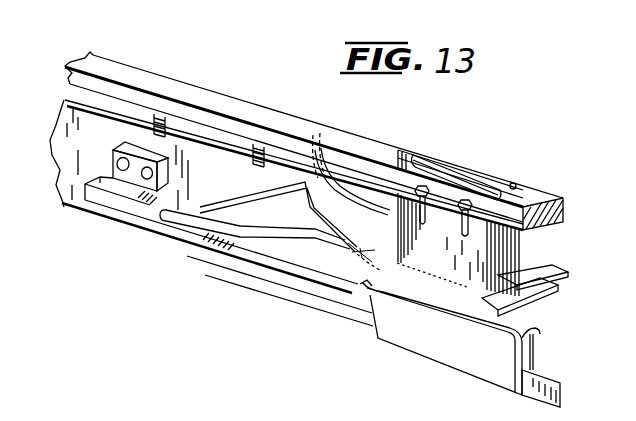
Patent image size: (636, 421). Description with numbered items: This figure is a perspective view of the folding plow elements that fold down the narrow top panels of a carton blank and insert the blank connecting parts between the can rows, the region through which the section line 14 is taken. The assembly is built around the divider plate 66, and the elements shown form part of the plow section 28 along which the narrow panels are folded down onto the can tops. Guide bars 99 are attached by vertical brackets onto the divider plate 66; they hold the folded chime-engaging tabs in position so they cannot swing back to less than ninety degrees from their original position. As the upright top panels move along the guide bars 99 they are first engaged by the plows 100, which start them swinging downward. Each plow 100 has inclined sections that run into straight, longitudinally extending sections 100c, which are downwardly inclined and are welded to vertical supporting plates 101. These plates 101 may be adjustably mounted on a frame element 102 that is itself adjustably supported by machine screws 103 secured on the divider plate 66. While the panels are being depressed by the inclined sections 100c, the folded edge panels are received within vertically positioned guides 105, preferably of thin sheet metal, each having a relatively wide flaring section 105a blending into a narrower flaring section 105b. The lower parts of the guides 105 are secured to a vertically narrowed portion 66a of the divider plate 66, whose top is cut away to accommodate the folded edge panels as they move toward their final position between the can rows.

The section line 14- 14 is at (47, 87).
The folding plows 28 is at (200, 267).
The divider plate 66 is at (207, 173).
The vertically narrowed portion of divider plate 66a is at (297, 264).
The guide bars 99 is at (128, 212).
The plows 100 is at (193, 214).
The straight longitudinally extending sections 100c is at (305, 198).
The vertical supporting plates 101 is at (440, 223).
The frame element 102 is at (400, 150).
The machine screws 103 is at (167, 127).
The vertically positioned guides 105 is at (435, 330).
The wide flaring sections 105a is at (376, 304).
The narrower flaring sections 105b is at (537, 333).